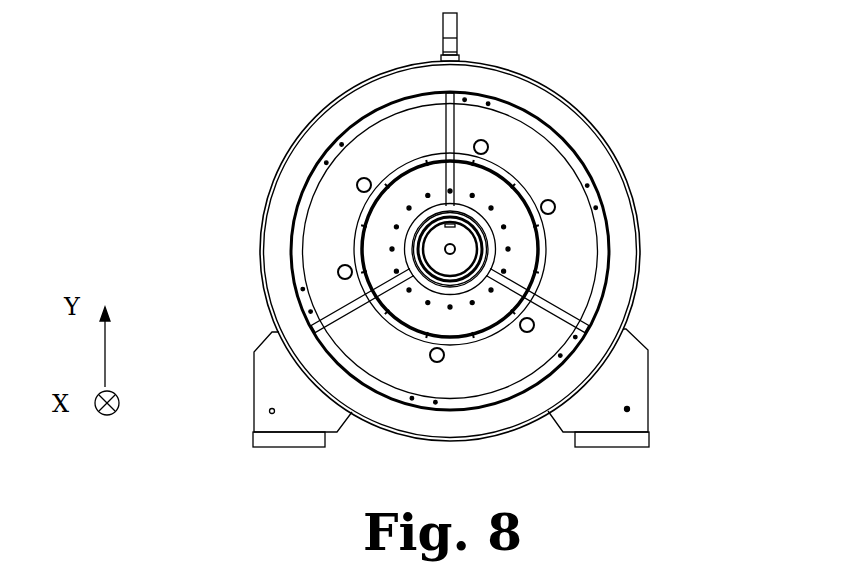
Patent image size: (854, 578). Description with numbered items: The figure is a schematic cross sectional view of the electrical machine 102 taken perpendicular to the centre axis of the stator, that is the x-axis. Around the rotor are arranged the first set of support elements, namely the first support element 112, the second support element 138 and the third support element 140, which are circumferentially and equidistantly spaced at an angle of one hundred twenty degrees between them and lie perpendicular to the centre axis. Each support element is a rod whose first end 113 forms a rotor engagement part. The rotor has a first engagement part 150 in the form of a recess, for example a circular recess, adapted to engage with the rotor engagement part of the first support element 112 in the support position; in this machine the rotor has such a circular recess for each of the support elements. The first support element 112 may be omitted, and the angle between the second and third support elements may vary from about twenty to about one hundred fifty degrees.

The electrical machine 102 is at (198, 62).
The first support element 112 is at (457, 128).
The first end 113 is at (453, 213).
The second support element 138 is at (563, 309).
The third support element 140 is at (334, 311).
The first engagement part 150 is at (462, 207).